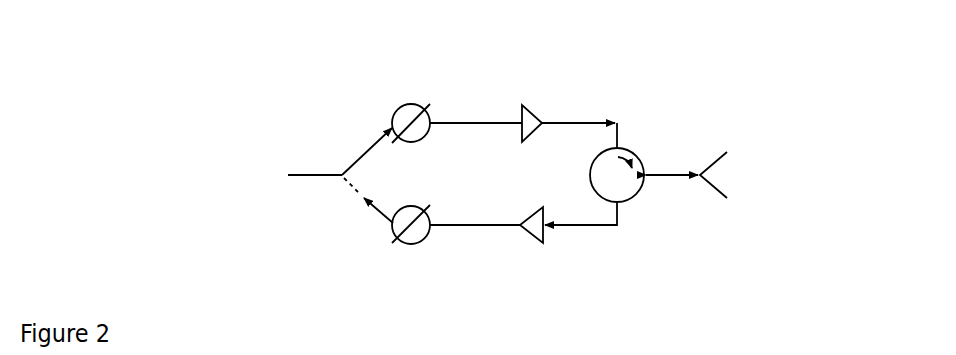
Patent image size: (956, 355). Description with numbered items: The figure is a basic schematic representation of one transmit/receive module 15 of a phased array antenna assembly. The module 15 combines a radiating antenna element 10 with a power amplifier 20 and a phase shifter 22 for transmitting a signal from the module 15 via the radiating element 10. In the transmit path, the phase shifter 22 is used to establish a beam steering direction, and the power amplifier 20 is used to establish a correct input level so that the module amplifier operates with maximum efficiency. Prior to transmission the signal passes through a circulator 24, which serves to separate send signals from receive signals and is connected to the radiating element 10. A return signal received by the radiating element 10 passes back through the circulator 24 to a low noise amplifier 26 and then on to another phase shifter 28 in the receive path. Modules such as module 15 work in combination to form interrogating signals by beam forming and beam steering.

The module 15 is at (322, 74).
The phase shifter 22 is at (403, 105).
The power amplifier 20 is at (523, 104).
The circulator 24 is at (632, 150).
The radiating antenna element 10 is at (713, 162).
The low noise amplifier 26 is at (542, 230).
The phase shifter 28 is at (401, 243).